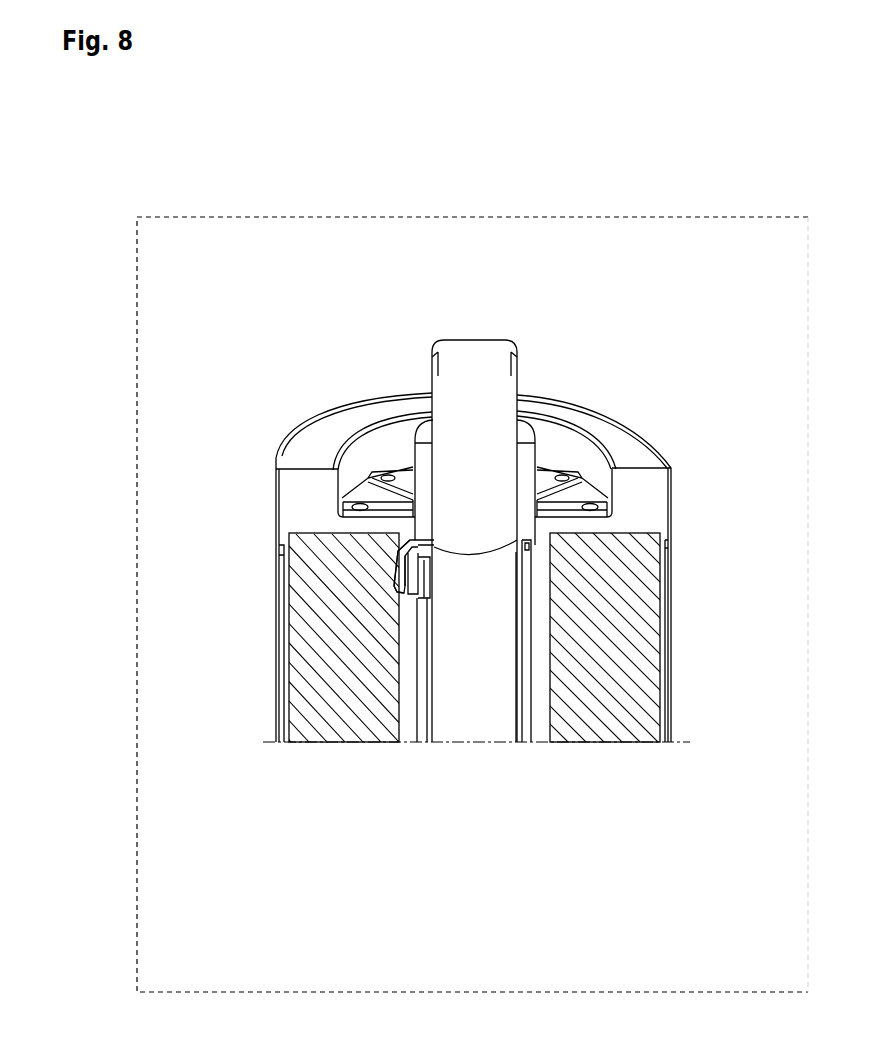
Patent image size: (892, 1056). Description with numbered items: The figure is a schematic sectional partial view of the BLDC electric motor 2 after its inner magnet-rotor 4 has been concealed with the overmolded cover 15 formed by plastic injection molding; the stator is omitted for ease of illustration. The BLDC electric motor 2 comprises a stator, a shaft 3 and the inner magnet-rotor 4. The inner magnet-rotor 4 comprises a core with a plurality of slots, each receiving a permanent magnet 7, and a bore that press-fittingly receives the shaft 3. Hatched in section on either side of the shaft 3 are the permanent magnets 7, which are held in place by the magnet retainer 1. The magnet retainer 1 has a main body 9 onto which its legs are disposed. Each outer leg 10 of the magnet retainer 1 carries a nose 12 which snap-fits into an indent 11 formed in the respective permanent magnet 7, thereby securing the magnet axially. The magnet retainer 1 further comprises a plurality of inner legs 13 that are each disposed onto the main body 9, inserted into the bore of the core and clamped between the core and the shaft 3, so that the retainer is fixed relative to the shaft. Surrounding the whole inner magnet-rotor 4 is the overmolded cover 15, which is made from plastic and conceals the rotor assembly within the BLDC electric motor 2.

The magnet retainer 1 is at (419, 564).
The BLDC electric motor 2 is at (457, 216).
The shaft 3 is at (498, 351).
The inner magnet-rotor 4 is at (738, 662).
The permanent magnet 7 is at (295, 612).
The main body 9 is at (430, 540).
The outer leg 10 is at (403, 556).
The indent 11 is at (391, 593).
The nose 12 is at (405, 590).
The inner leg 13 is at (430, 567).
The overmolded cover 15 is at (658, 497).